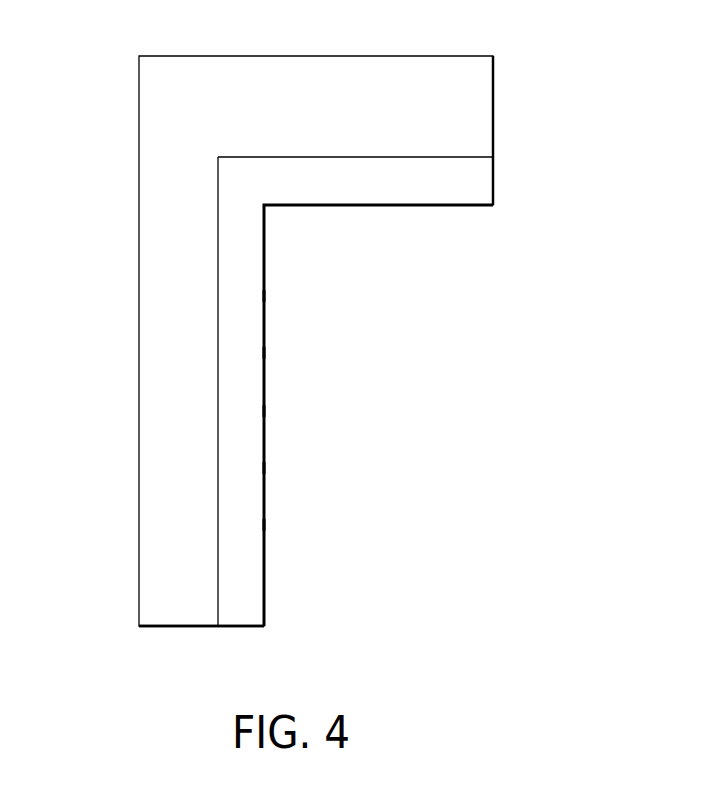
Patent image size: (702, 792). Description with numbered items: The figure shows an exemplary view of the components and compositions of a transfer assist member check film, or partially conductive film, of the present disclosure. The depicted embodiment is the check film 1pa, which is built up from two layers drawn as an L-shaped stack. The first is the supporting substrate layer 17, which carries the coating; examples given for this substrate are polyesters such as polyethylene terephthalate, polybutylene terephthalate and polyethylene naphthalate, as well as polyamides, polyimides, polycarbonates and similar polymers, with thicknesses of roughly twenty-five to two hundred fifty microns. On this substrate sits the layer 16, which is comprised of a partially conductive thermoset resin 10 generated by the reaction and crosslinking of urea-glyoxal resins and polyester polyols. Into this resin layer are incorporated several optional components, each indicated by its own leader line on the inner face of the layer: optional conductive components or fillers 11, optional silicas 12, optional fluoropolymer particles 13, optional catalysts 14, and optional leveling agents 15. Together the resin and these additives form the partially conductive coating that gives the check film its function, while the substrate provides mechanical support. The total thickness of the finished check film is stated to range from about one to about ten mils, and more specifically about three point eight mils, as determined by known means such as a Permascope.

The check film 1pa is at (114, 318).
The partially conductive thermoset resin 10 is at (243, 525).
The conductive components or fillers 11 is at (243, 468).
The silicas 12 is at (243, 411).
The fluoropolymer particles 13 is at (243, 353).
The catalysts 14 is at (243, 296).
The leveling agents 15 is at (474, 182).
The layer 16 is at (240, 628).
The supporting substrate layer 17 is at (179, 628).